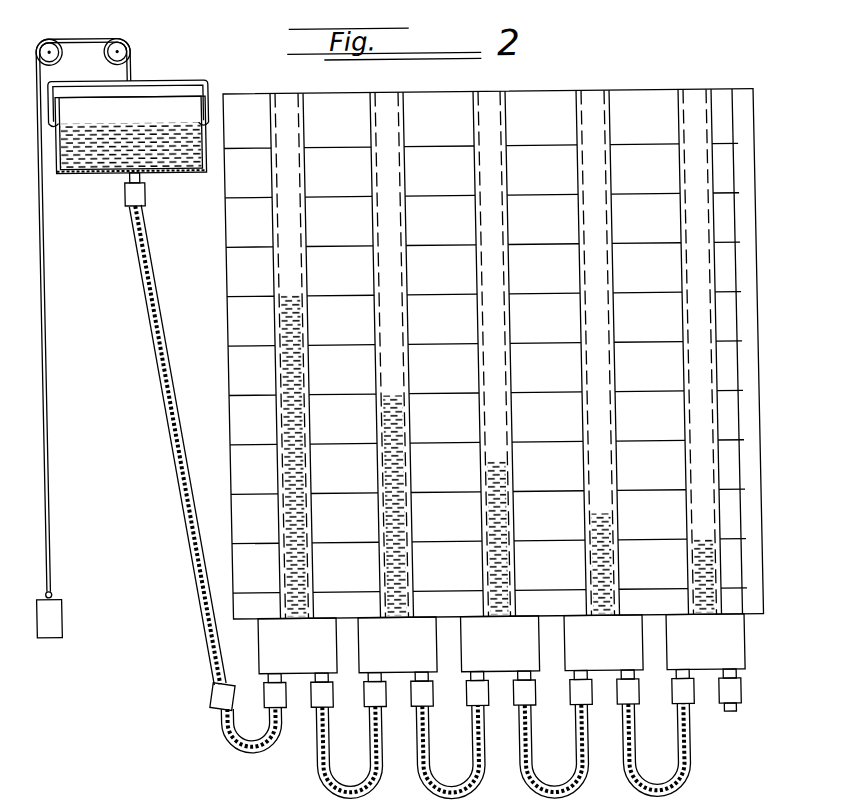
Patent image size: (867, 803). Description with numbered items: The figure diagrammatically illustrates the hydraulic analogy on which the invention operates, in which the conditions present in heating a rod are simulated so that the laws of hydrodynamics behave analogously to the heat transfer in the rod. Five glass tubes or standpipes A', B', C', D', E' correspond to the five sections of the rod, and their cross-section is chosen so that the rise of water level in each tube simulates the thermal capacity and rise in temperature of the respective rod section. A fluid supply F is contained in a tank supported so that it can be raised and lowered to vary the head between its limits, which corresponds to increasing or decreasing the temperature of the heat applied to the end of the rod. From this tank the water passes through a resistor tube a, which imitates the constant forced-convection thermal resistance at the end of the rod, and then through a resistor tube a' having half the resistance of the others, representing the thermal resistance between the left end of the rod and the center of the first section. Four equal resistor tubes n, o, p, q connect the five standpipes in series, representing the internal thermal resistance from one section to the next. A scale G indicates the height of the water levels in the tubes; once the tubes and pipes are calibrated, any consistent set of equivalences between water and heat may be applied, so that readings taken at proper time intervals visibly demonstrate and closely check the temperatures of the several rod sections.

The fluid supply F is at (130, 127).
The resistor tube a is at (182, 457).
The resistor tube a' is at (252, 746).
The glass tube or standpipe A' is at (272, 338).
The glass tube or standpipe B' is at (376, 339).
The glass tube or standpipe C' is at (480, 338).
The glass tube or standpipe D' is at (590, 334).
The glass tube or standpipe E' is at (698, 332).
The scale G is at (744, 169).
The U-tube connecting first and second chambers n is at (369, 781).
The U-tube connecting second and third chambers o is at (471, 783).
The U-tube connecting third and fourth chambers p is at (574, 781).
The U-tube connecting fourth and fifth chambers q is at (677, 779).